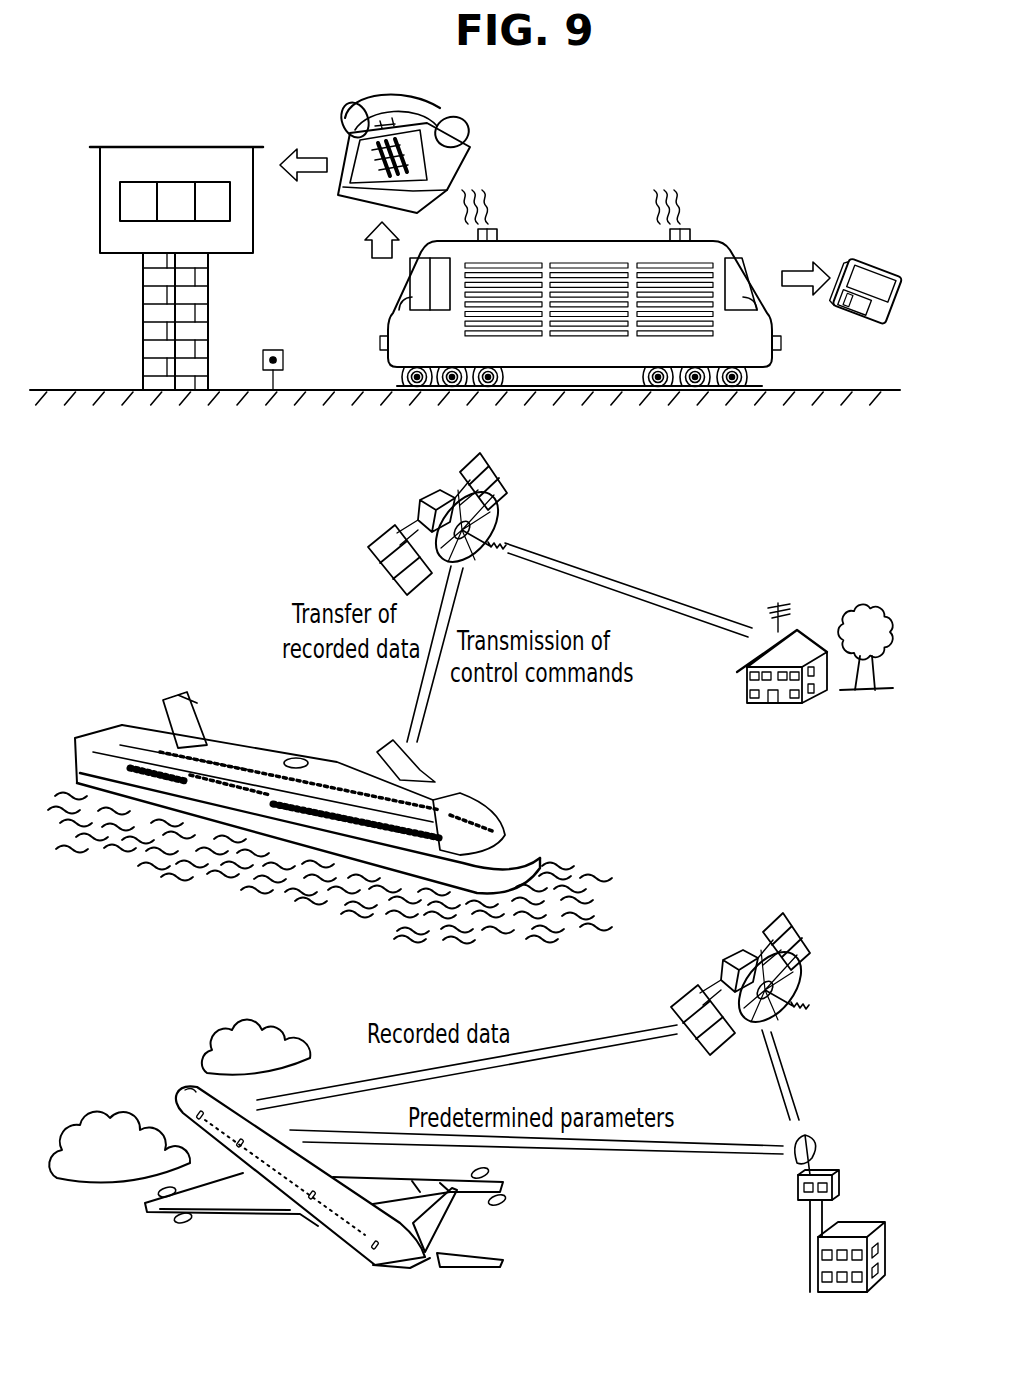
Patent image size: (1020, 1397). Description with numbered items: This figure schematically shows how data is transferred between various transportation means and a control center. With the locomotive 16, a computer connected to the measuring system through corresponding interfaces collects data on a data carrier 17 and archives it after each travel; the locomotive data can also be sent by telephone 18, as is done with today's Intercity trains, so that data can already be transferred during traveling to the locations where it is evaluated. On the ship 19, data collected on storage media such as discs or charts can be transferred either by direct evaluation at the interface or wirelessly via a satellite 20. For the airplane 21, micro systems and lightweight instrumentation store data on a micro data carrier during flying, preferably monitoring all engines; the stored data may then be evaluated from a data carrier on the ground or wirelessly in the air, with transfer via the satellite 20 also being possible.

The locomotive 16 is at (590, 252).
The data carrier 17 is at (880, 258).
The telephone 18 is at (407, 90).
The ship 19 is at (242, 748).
The satellite 20 is at (422, 506).
The airplane 21 is at (335, 1232).